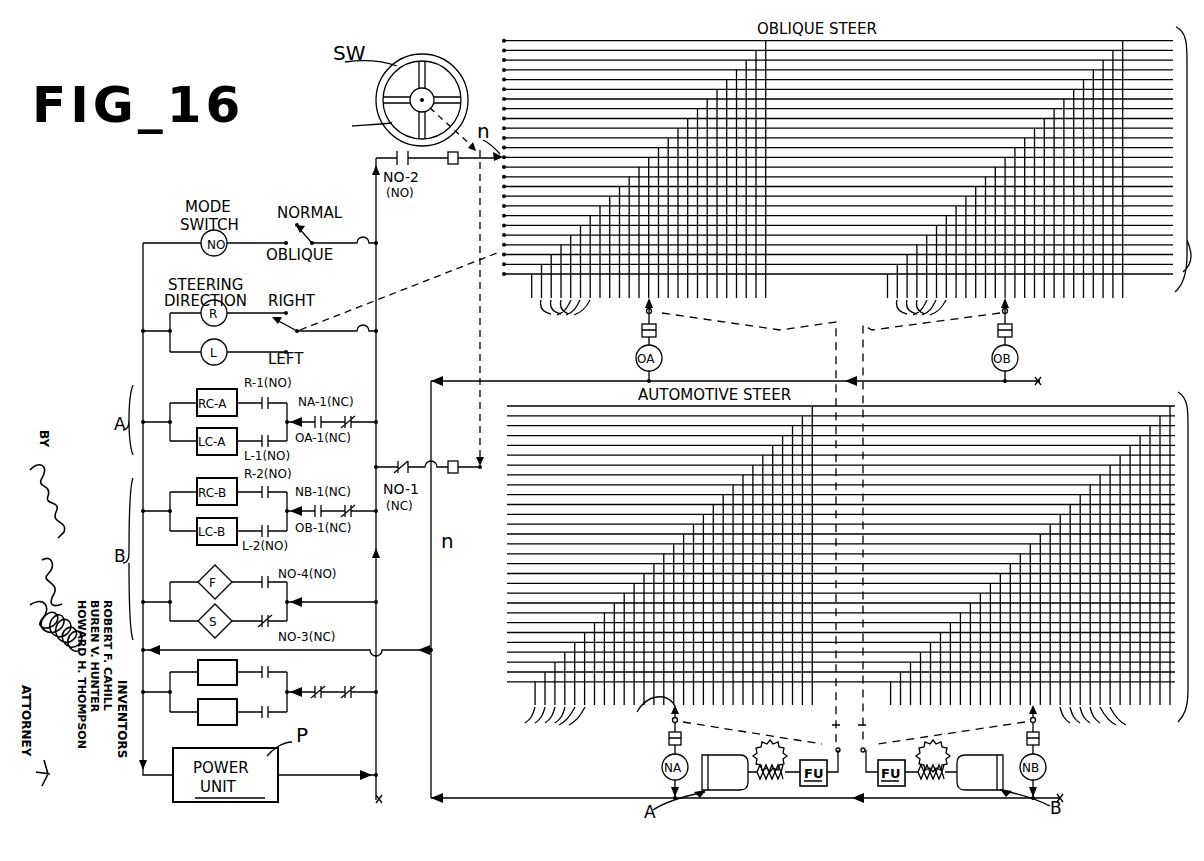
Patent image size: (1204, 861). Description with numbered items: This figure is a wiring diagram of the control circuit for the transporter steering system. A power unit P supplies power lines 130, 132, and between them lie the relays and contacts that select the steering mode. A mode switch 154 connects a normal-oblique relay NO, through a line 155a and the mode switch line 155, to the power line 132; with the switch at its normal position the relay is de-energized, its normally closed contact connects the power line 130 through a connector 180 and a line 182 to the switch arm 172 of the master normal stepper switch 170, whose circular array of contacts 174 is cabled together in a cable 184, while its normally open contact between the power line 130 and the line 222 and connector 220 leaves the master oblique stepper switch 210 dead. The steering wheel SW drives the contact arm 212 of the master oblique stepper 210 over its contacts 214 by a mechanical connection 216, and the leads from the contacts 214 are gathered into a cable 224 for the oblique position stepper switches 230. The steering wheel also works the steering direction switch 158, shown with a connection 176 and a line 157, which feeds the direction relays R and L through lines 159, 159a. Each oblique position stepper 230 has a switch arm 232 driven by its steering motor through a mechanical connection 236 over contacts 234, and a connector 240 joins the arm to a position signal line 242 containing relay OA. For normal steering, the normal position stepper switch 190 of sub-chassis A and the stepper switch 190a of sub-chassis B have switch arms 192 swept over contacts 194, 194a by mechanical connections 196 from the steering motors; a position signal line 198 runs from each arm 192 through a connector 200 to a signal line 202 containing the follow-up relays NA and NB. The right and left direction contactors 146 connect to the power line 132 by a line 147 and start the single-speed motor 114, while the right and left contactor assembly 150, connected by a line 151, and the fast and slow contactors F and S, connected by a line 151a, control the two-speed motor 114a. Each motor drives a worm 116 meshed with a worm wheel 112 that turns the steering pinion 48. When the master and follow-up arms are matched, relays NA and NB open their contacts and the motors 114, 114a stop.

The master oblique stepper switch 210 is at (503, 41).
The contacts 214 is at (504, 91).
The contact arm 212 is at (504, 205).
The mechanical connection 216 is at (390, 124).
The power line 222 is at (392, 154).
The connector 220 is at (452, 165).
The cable 224 is at (847, 172).
The cable 184 is at (847, 545).
The dashed mechanical link 176 is at (478, 362).
The mechanical connection 236 is at (831, 529).
The power line 132 is at (143, 270).
The power line 130 is at (378, 310).
The line 159 is at (438, 295).
The line 155a is at (161, 243).
The mode switch 154 is at (305, 227).
The mode switch line 155 is at (378, 250).
The line 159a is at (143, 313).
The steering direction switch 158 is at (284, 332).
The steering direction switch output 157 is at (376, 336).
The contactors 146 is at (197, 391).
The line 147 is at (173, 441).
The contactor assembly 150 is at (197, 487).
The line 151 is at (173, 534).
The line 151a is at (173, 614).
The line 182 is at (436, 462).
The coil 180 is at (456, 474).
The contacts 174 is at (502, 525).
The rotary switch arm 172 is at (505, 554).
The master normal stepper switch 170 is at (537, 408).
The oblique position stepper switch 230 is at (540, 288).
The contacts 234 is at (743, 313).
The switch arm 232 is at (660, 312).
The connector 240 is at (641, 338).
The position signal line 242 is at (656, 340).
The normal position stepper switch 190 is at (528, 705).
The contacts 194 is at (646, 712).
The switch arm 192 is at (680, 721).
The position signal line 198 is at (671, 726).
The connector 200 is at (669, 740).
The signal line 202 is at (665, 754).
The steering pinion 48 is at (851, 782).
The steering motor 114 is at (770, 780).
The two speed steering motor 114a is at (938, 780).
The worm 116 is at (778, 780).
The worm wheel 112 is at (758, 750).
The mechanical connection 196 is at (854, 736).
The contacts 194a is at (1094, 722).
The normal position stepper switch 190a is at (1148, 705).